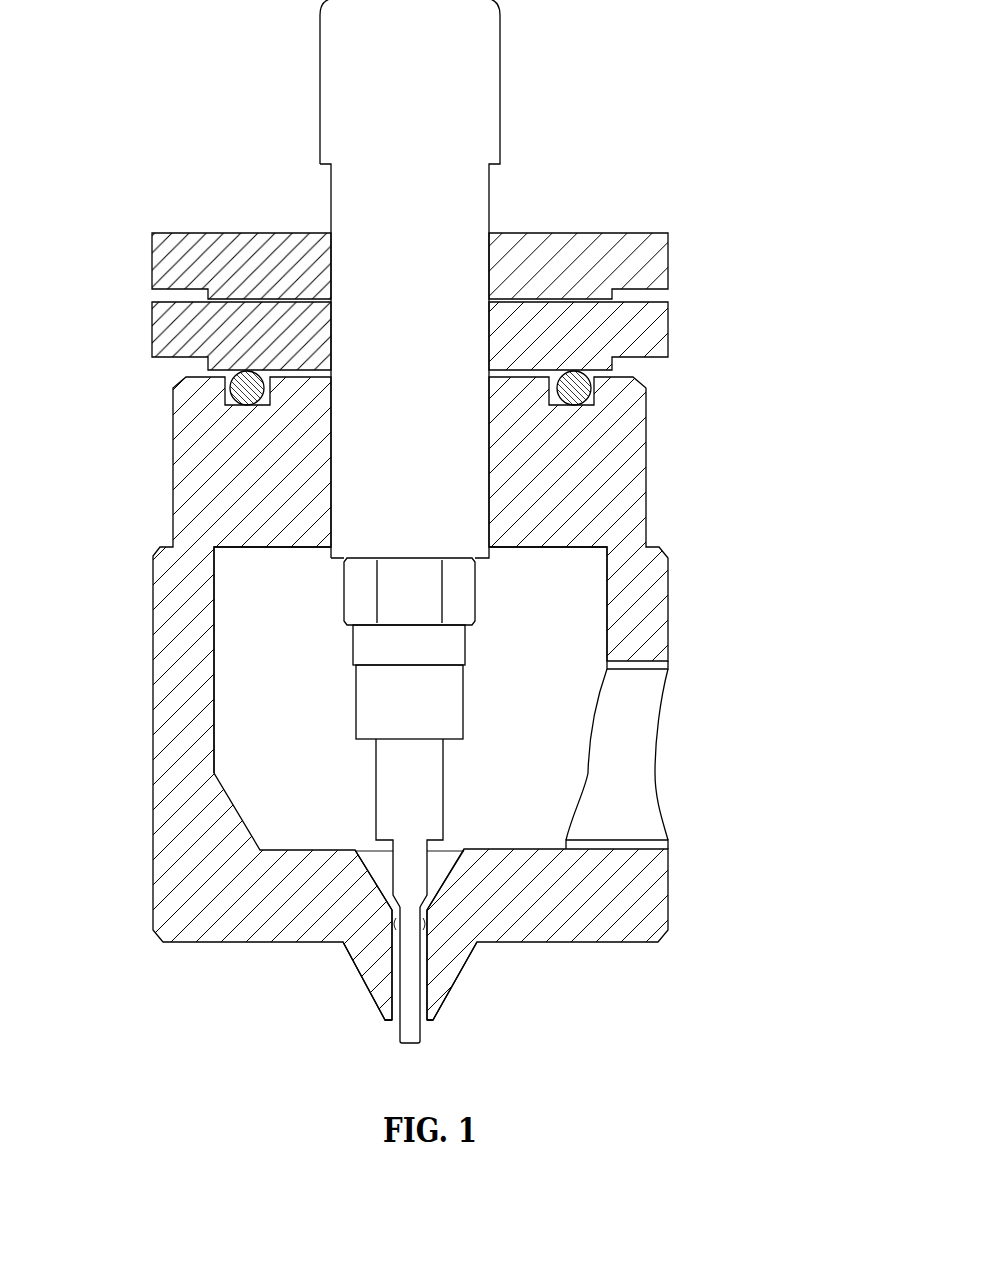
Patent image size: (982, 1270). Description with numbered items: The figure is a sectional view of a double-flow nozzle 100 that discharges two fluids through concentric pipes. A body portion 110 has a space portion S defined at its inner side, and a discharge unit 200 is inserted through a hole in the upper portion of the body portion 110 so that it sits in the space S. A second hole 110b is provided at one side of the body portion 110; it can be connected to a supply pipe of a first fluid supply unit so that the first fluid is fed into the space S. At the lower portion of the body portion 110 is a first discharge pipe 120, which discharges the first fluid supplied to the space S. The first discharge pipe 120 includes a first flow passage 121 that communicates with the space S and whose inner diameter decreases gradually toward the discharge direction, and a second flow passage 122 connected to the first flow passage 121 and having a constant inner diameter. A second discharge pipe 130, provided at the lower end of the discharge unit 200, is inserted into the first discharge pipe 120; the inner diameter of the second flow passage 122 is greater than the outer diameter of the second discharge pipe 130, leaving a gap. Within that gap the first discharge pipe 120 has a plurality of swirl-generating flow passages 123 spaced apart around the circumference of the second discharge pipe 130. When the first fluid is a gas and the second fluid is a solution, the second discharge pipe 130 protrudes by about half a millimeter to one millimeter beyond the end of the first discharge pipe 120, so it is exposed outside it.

The double-flow nozzle 100 is at (150, 73).
The discharge unit 200 is at (487, 120).
The body portion 110 is at (638, 477).
The second hole 110b is at (633, 763).
The space portion S is at (278, 632).
The first discharge pipe 120 is at (343, 948).
The first flow passage 121 is at (383, 866).
The second flow passage 122 is at (398, 992).
The swirl-generating flow passages 123 is at (423, 986).
The second discharge pipe 130 is at (415, 1034).